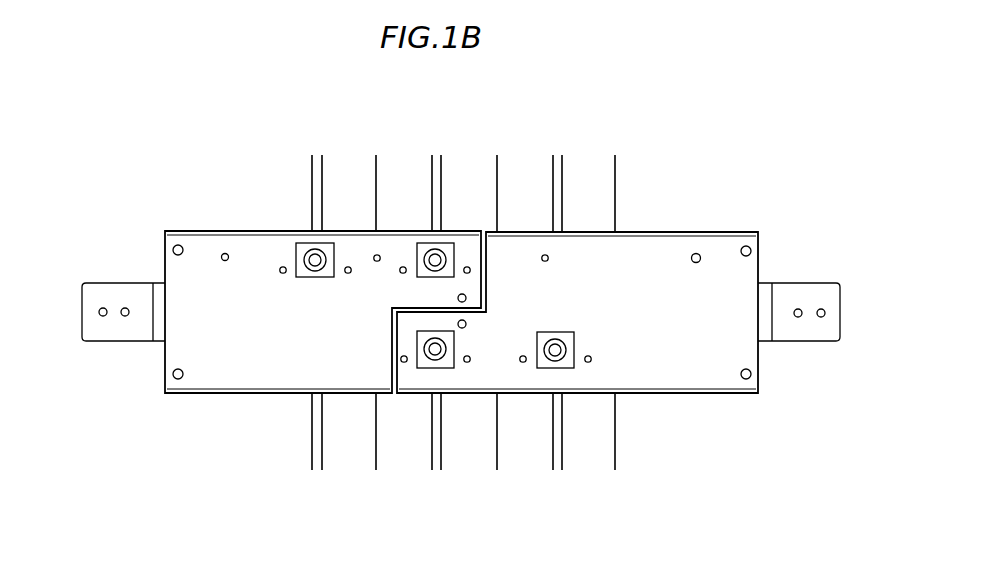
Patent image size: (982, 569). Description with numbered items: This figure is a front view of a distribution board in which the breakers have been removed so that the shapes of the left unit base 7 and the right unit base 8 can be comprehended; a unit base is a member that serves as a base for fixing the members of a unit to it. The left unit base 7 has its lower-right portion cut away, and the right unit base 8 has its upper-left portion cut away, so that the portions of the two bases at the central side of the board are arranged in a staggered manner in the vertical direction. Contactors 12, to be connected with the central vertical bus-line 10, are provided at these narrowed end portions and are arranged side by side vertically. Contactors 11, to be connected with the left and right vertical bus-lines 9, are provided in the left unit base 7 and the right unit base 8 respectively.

The left unit base 7 is at (228, 232).
The right unit base 8 is at (718, 232).
The left and right vertical bus-lines 9 is at (322, 168).
The central vertical bus-line 10 is at (441, 168).
The contactors 11 is at (305, 243).
The contactors 12 is at (423, 243).